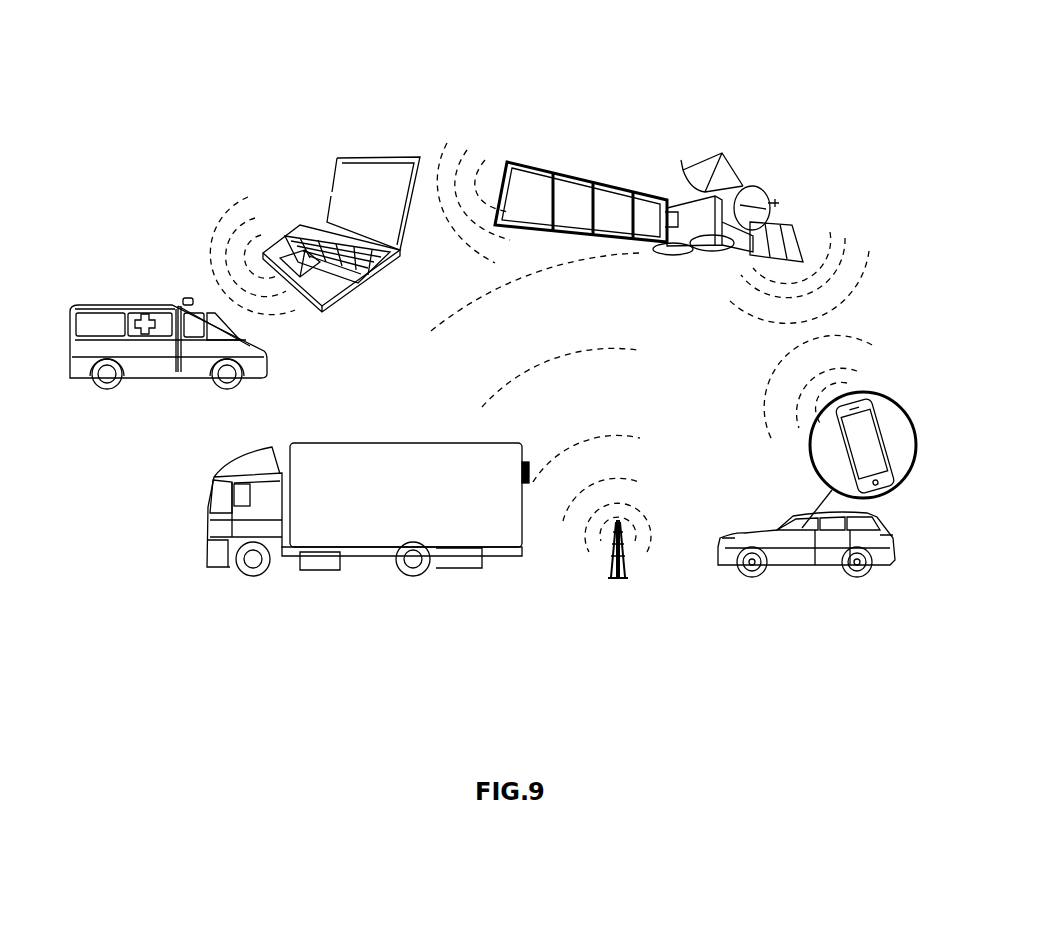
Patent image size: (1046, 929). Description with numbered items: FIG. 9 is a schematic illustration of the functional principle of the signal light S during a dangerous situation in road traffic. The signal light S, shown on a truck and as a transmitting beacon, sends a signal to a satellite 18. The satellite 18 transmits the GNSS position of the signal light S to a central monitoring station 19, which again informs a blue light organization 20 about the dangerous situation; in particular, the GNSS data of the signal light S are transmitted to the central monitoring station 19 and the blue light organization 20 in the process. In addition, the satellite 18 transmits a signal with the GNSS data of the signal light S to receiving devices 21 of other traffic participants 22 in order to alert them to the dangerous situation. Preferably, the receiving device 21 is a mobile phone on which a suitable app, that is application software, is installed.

The satellite 18 is at (655, 168).
The central monitoring station 19 is at (362, 142).
The blue light organization 20 is at (145, 293).
The receiving device 21 is at (866, 436).
The other traffic participants 22 is at (797, 580).
The signal light S is at (529, 462).